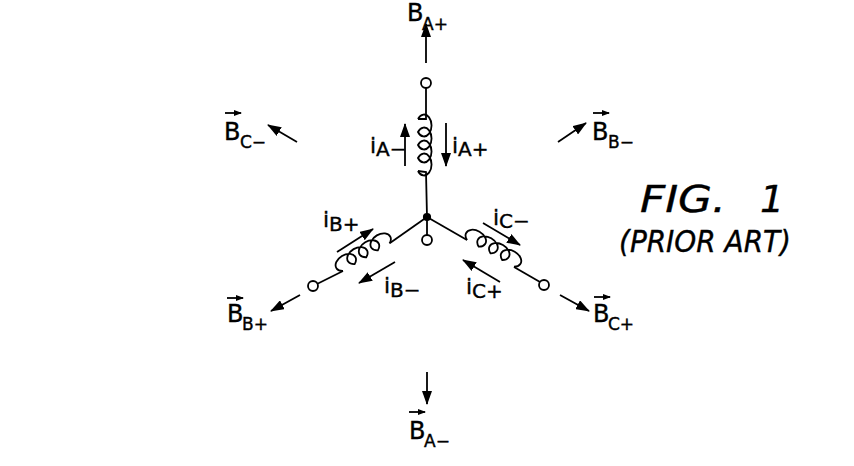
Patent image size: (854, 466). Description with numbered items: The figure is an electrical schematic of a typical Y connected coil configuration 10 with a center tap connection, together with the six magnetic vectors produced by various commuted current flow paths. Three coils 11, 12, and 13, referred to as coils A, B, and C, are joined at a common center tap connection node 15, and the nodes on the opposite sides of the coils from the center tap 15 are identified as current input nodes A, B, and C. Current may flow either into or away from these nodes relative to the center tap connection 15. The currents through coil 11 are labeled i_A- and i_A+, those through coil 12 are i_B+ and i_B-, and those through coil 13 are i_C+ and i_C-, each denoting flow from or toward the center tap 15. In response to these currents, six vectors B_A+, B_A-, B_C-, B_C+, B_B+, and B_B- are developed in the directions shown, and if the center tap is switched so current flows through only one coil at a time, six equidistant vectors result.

The Y connected coil configuration 10 is at (338, 82).
The coil A 11 is at (417, 117).
The coil B 12 is at (345, 274).
The coil C 13 is at (508, 270).
The center tap connection node 15 is at (423, 215).